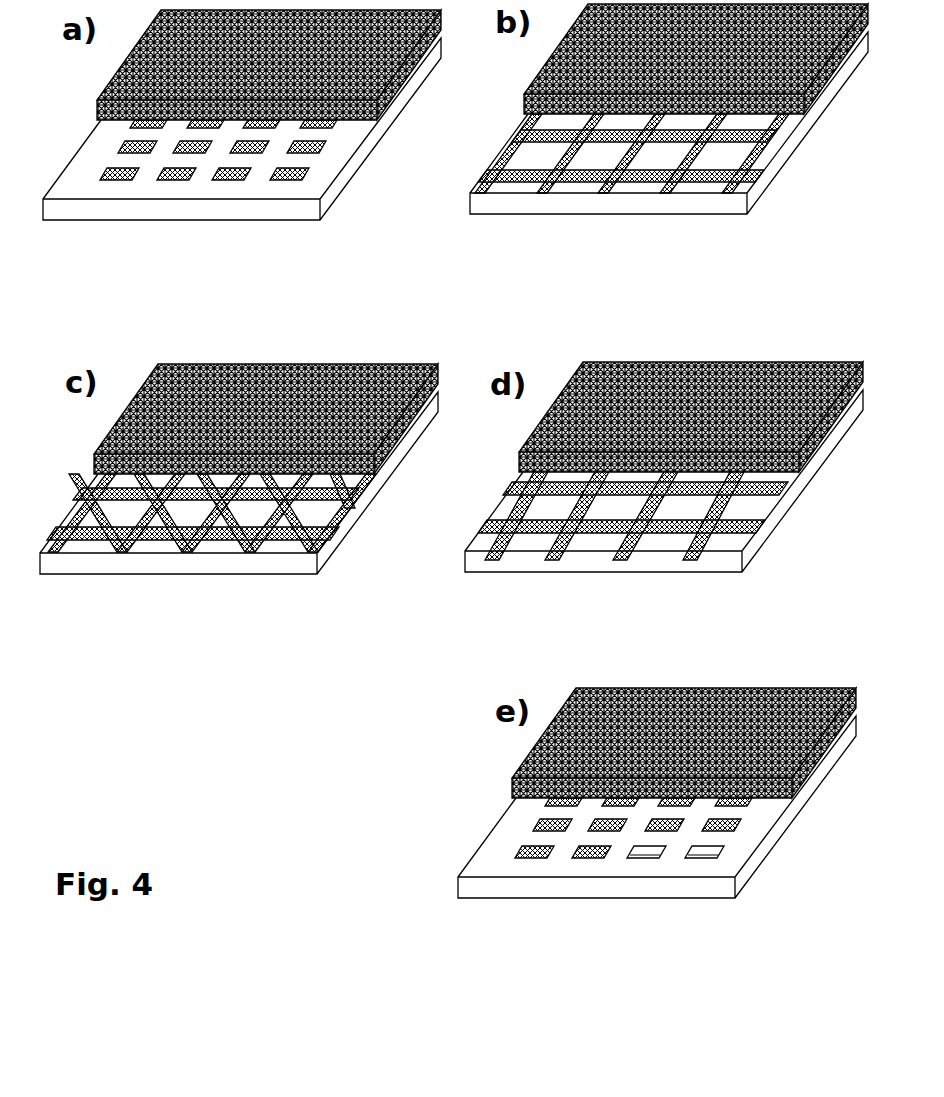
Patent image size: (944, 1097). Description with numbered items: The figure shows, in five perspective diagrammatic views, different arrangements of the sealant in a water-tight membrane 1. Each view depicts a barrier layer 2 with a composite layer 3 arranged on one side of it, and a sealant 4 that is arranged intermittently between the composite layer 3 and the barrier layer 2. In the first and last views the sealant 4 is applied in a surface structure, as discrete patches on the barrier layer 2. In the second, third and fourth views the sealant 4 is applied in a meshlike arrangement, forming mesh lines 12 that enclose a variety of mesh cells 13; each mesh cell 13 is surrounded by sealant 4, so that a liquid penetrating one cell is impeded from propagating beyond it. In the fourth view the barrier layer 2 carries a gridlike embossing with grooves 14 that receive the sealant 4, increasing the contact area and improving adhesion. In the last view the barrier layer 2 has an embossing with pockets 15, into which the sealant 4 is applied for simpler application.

The water-tight membrane 1 is at (70, 75).
The barrier layer 2 is at (608, 888).
The composite layer 3 is at (805, 780).
The sealant 4 is at (582, 857).
The mesh lines 12 is at (747, 515).
The mesh cells 13 is at (308, 512).
The grooves 14 is at (675, 557).
The pockets 15 is at (698, 855).